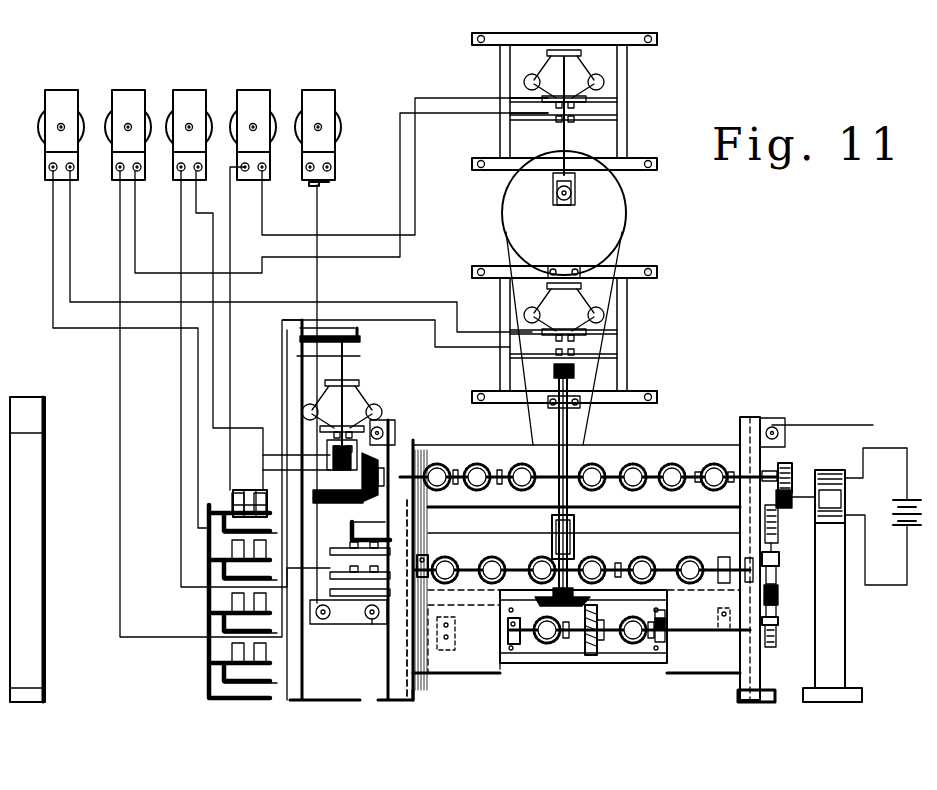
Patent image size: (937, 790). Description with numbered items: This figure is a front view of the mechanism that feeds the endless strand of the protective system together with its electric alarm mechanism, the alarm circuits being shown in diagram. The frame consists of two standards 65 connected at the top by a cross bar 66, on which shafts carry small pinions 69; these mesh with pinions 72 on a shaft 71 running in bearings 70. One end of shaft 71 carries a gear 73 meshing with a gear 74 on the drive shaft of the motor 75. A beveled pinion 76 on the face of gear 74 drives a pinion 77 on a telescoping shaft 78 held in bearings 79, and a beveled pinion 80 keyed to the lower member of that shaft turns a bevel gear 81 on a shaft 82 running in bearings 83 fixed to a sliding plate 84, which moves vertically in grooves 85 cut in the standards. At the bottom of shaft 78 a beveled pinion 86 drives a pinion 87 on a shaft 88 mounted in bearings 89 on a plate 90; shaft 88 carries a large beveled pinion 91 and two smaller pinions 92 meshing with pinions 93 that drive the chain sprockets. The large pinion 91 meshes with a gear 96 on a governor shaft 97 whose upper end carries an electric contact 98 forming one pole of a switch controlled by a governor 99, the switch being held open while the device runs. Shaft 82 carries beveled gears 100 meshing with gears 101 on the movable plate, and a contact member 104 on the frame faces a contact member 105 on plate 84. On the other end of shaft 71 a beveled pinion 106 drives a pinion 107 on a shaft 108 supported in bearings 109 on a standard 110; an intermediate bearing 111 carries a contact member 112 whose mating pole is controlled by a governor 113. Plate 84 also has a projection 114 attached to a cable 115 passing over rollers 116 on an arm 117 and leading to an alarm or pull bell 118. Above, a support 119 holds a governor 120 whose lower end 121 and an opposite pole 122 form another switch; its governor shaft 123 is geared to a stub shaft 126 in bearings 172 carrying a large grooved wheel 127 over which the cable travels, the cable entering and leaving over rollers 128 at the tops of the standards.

The alarm or pull bell 118 is at (326, 160).
The arm 117 is at (312, 652).
The contact member 112 is at (330, 449).
The bearing 111 is at (332, 474).
The bearings 109 is at (360, 338).
The standard 110 is at (360, 356).
The governor 113 is at (380, 385).
The pinion 107 is at (378, 500).
The shaft 108 is at (347, 516).
The roller 128 is at (380, 430).
The contact member 104 is at (345, 560).
The contact member 105 is at (352, 583).
The projection 114 is at (352, 590).
The cable 115 is at (345, 625).
The rollers 116 is at (375, 624).
The grooves 85 is at (407, 668).
The support 119 is at (627, 72).
The governor 120 is at (600, 83).
The lower end of governor 121 is at (582, 100).
The opposite pole of switch 122 is at (582, 117).
The governor shaft 123 is at (560, 130).
The grooved wheel 127 is at (607, 213).
The stub shaft 126 is at (560, 200).
The bearings 172 is at (552, 188).
The governor 99 is at (598, 312).
The electric contact 98 is at (580, 348).
The governor shaft 97 is at (572, 565).
The sliding plate 84 is at (645, 535).
The cross bar 66 is at (511, 455).
The beveled pinion 106 is at (400, 460).
The bearings 70 is at (745, 470).
The shaft 71 is at (700, 470).
The small pinions 69 is at (440, 490).
The pinions 72 is at (478, 490).
The gear 73 is at (788, 463).
The gear 74 is at (790, 490).
The beveled pinion 76 is at (815, 495).
The pinion 77 is at (768, 517).
The beveled pinion 80 is at (779, 560).
The telescoping shaft 78 is at (778, 590).
The bearings 79 is at (777, 610).
The beveled pinion 86 is at (778, 621).
The pinion 87 is at (776, 640).
The motor 75 is at (875, 460).
The beveled gears 100 is at (528, 552).
The gears 101 is at (468, 557).
The shaft 82 is at (665, 560).
The bevel gear 81 is at (740, 556).
The bearings 83 is at (428, 580).
The standards 65 is at (428, 655).
The shaft 88 is at (638, 693).
The gear 96 is at (590, 600).
The bearings 89 is at (508, 636).
The plate 90 is at (600, 655).
The large beveled pinion 91 is at (590, 655).
The pinions 93 is at (540, 643).
The smaller pinions 92 is at (563, 640).